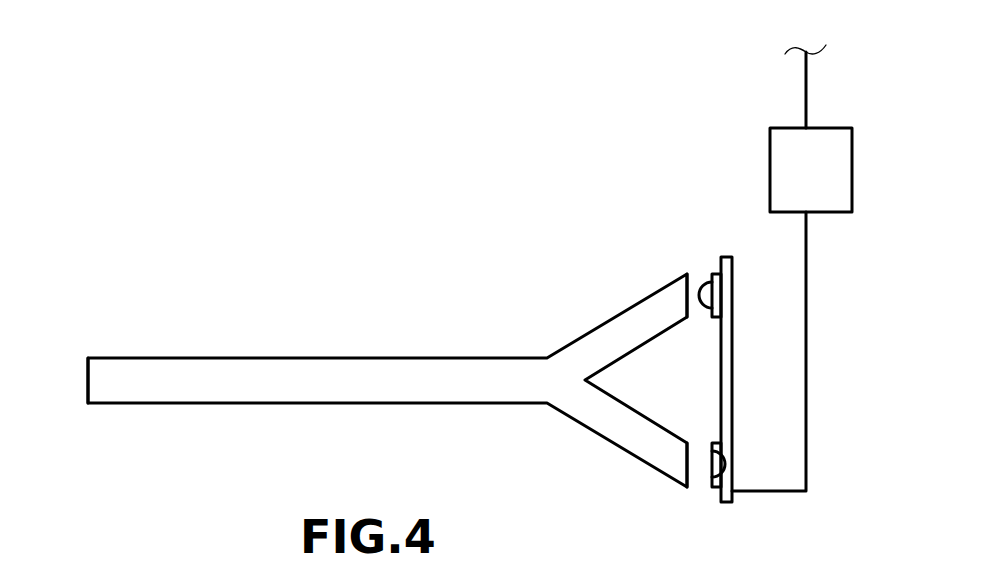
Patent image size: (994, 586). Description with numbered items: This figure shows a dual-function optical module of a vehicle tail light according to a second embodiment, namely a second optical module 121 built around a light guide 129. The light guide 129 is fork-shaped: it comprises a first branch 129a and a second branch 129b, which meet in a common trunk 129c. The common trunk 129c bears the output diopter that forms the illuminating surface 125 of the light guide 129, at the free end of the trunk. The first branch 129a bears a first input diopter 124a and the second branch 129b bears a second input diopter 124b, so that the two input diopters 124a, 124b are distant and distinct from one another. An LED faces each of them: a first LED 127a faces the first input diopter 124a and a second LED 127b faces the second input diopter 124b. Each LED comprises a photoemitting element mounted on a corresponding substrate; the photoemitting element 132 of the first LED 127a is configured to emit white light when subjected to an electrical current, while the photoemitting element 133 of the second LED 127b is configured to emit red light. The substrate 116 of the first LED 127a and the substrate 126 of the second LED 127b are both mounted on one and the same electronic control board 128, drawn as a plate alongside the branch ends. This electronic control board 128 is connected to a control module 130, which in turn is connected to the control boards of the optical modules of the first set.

The second optical module 121 is at (384, 378).
The illuminating surface 125 is at (87, 378).
The light guide 129 is at (343, 350).
The first branch 129a is at (602, 336).
The second branch 129b is at (600, 422).
The common trunk 129c is at (285, 390).
The first input diopter 124a is at (688, 277).
The second input diopter 124b is at (688, 478).
The first LED 127a is at (708, 327).
The second LED 127b is at (708, 435).
The photoemitting element 132 is at (701, 285).
The photoemitting element 133 is at (701, 475).
The substrate 116 is at (714, 302).
The substrate 126 is at (714, 458).
The electronic control board 128 is at (726, 382).
The control module 130 is at (782, 141).